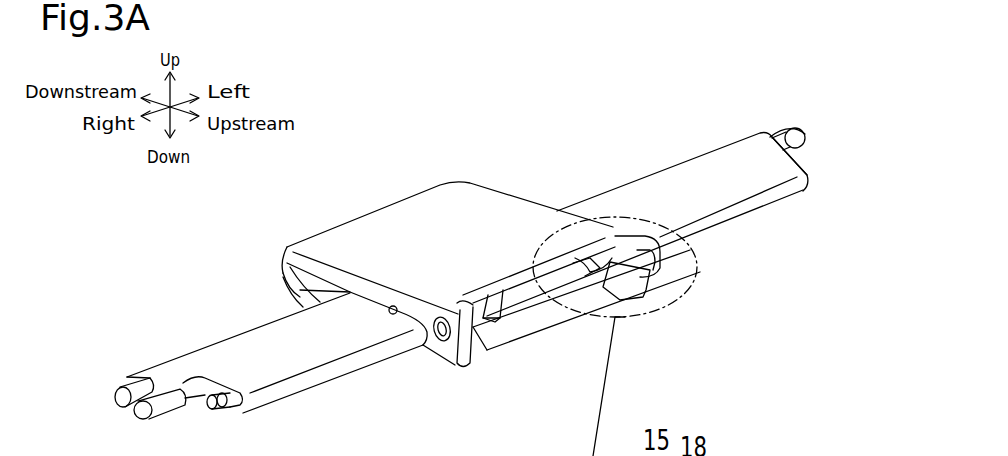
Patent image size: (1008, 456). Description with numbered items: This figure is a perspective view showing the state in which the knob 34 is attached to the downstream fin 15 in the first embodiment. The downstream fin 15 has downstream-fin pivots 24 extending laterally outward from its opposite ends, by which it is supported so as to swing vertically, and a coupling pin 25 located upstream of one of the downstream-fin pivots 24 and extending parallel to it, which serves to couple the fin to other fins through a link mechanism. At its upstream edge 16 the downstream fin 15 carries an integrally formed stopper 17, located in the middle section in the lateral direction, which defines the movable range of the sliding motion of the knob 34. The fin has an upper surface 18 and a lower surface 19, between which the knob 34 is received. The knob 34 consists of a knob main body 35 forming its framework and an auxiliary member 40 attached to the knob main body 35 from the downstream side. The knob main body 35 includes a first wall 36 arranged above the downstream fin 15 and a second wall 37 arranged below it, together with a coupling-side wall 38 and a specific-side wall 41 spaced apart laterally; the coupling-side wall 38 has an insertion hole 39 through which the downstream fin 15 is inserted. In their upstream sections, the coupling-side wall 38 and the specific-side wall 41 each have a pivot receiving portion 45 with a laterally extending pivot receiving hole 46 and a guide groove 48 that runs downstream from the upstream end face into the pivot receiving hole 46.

The downstream fin 15 is at (207, 331).
The upstream edge 16 is at (750, 210).
The stopper 17 is at (520, 297).
The upper surface 18 is at (712, 160).
The lower surface 19 is at (793, 197).
The downstream-fin pivot 24 is at (115, 405).
The coupling pin 25 is at (200, 412).
The knob 34 is at (357, 187).
The knob main body 35 is at (340, 233).
The first wall 36 is at (500, 197).
The second wall 37 is at (537, 328).
The coupling-side wall 38 is at (380, 298).
The insertion hole 39 is at (392, 305).
The auxiliary member 40 is at (283, 270).
The specific-side wall 41 is at (693, 280).
The pivot receiving portion 45 is at (457, 300).
The pivot receiving hole 46 is at (440, 343).
The guide groove 48 is at (485, 347).